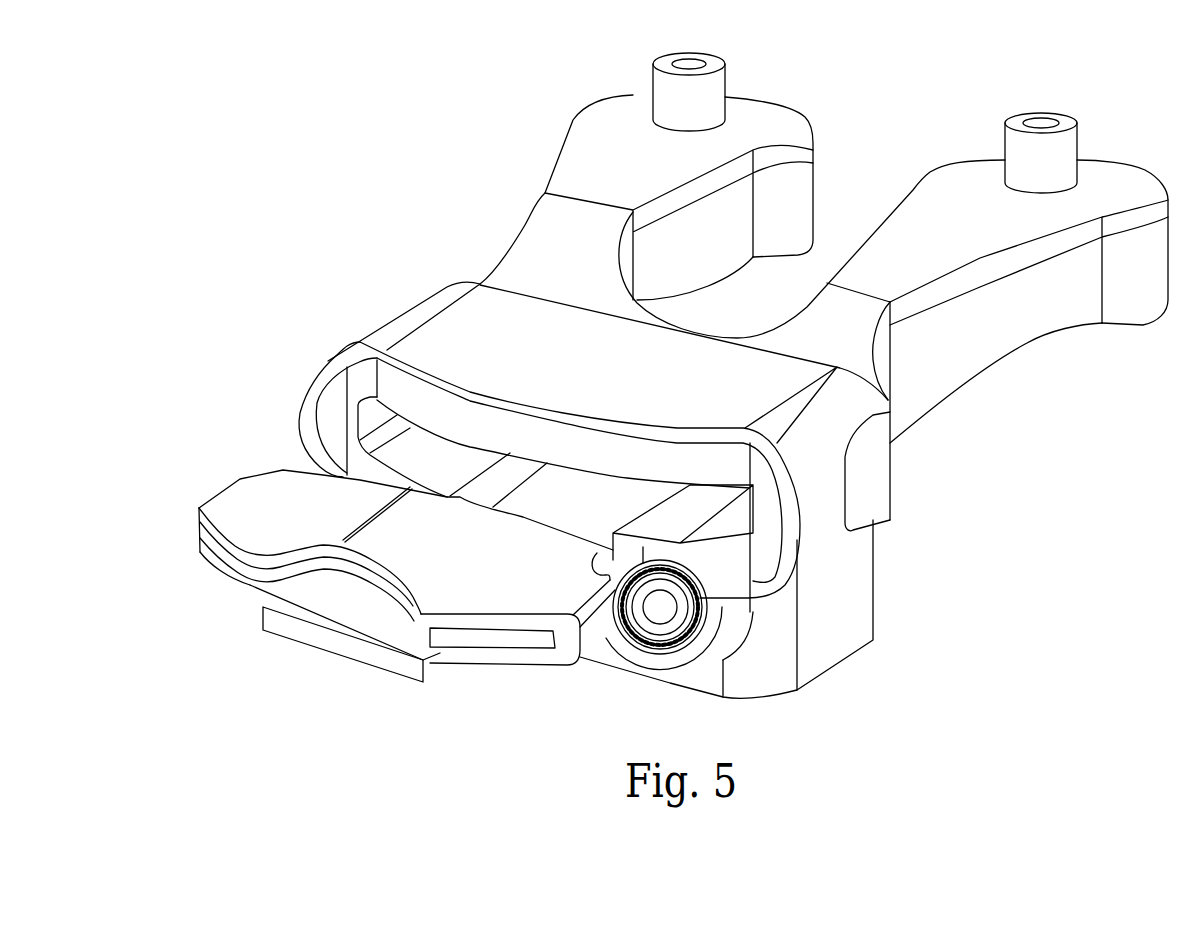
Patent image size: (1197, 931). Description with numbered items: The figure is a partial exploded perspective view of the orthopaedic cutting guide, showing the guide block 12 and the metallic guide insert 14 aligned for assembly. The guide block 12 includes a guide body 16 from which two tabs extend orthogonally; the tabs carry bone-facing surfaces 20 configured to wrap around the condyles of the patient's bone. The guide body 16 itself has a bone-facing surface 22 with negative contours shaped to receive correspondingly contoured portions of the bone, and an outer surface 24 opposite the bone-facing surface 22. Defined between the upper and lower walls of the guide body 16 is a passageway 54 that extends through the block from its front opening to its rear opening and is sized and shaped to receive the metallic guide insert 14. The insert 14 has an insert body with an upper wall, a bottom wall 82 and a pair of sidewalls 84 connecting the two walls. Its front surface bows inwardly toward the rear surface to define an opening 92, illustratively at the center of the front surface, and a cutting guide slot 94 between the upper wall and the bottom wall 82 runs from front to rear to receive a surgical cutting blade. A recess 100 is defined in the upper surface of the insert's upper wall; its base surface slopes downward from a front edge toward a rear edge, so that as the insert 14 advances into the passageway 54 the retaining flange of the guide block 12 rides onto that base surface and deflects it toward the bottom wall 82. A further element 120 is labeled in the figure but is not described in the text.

The recess 100 is at (270, 148).
The guide block 12 is at (446, 260).
The metallic guide insert 14 is at (224, 469).
The guide body 16 is at (417, 345).
The bone-facing surfaces 20 is at (1017, 345).
The bone-facing surface 22 is at (885, 590).
The outer surface 24 is at (710, 680).
The passageway 54 is at (603, 497).
The bottom wall 82 is at (202, 506).
The sidewalls 84 is at (213, 571).
The opening 92 is at (333, 586).
The cutting guide slot 94 is at (250, 578).
The bottom rail 120 is at (383, 661).